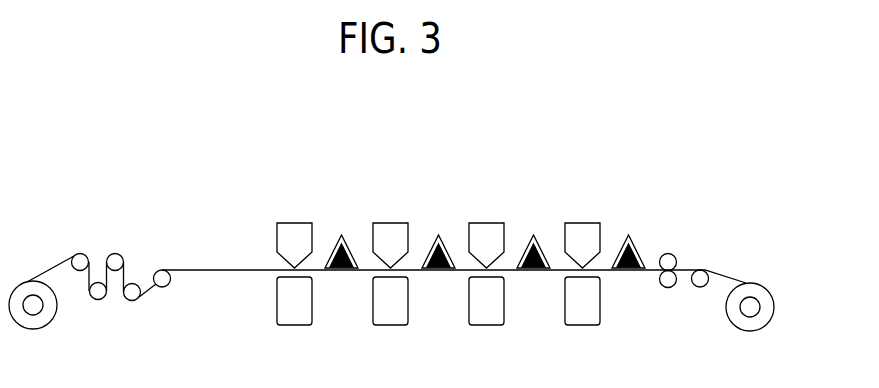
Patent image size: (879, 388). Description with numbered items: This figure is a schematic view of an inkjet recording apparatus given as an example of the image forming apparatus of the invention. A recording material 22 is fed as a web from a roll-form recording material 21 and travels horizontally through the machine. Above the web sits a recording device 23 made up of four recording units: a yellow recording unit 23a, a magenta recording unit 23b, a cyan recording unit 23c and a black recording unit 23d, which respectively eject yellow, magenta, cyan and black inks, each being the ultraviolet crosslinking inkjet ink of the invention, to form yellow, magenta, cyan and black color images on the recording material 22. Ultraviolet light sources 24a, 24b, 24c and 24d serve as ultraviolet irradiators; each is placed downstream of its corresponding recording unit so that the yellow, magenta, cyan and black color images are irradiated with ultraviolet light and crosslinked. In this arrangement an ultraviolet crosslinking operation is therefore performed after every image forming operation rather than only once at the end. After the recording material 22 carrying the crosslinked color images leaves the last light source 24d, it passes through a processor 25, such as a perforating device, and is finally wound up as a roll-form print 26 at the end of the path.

The roll-form recording material 21 is at (33, 315).
The recording material 22 is at (205, 267).
The recording device 23 is at (273, 176).
The yellow recording unit 23a is at (293, 232).
The magenta recording unit 23b is at (390, 232).
The cyan recording unit 23c is at (486, 232).
The black recording unit 23d is at (582, 232).
The ultraviolet light source 24a is at (341, 240).
The ultraviolet light source 24b is at (439, 240).
The ultraviolet light source 24c is at (533, 240).
The ultraviolet light source 24d is at (629, 240).
The processor 25 is at (686, 253).
The roll-form print 26 is at (750, 317).